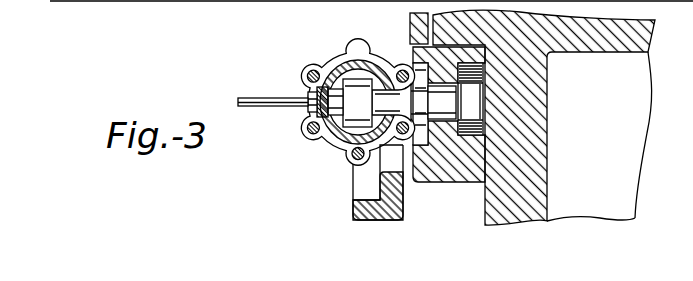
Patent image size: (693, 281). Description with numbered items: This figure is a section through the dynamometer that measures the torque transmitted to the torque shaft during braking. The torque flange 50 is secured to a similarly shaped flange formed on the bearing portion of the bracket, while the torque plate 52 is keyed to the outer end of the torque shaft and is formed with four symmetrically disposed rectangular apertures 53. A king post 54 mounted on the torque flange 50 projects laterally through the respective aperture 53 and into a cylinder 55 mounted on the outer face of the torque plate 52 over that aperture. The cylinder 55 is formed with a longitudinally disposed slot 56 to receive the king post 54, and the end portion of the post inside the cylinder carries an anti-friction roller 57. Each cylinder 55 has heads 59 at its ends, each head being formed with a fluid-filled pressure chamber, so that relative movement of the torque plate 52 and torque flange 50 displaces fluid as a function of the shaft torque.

The torque flange 50 is at (463, 172).
The torque plate 52 is at (404, 209).
The rectangular aperture 53 is at (383, 170).
The king post 54 is at (442, 116).
The cylinder 55 is at (336, 62).
The longitudinally disposed slot 56 is at (351, 151).
The anti-friction roller 57 is at (330, 131).
The head 59 is at (325, 64).